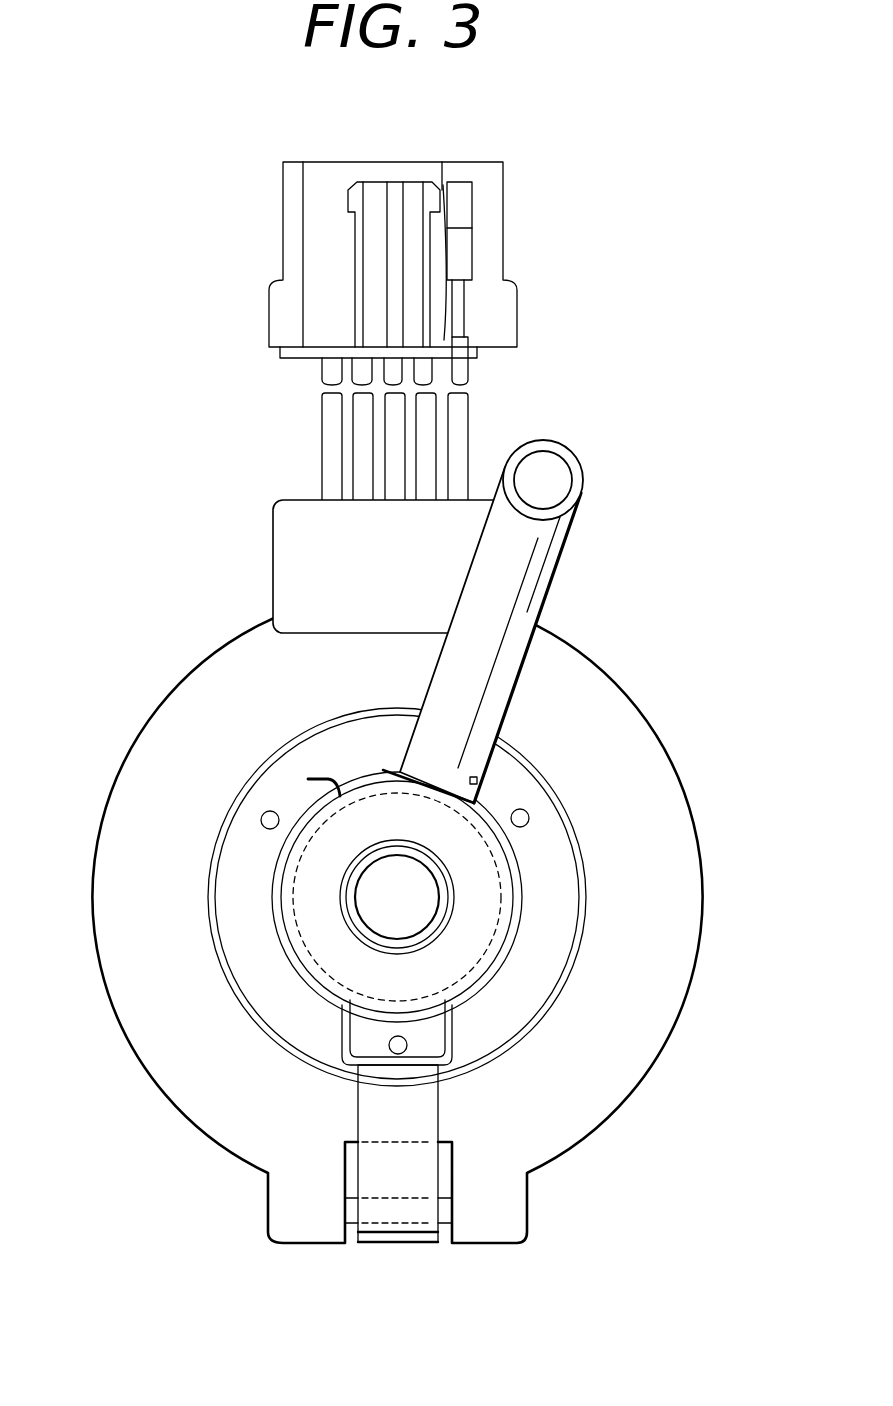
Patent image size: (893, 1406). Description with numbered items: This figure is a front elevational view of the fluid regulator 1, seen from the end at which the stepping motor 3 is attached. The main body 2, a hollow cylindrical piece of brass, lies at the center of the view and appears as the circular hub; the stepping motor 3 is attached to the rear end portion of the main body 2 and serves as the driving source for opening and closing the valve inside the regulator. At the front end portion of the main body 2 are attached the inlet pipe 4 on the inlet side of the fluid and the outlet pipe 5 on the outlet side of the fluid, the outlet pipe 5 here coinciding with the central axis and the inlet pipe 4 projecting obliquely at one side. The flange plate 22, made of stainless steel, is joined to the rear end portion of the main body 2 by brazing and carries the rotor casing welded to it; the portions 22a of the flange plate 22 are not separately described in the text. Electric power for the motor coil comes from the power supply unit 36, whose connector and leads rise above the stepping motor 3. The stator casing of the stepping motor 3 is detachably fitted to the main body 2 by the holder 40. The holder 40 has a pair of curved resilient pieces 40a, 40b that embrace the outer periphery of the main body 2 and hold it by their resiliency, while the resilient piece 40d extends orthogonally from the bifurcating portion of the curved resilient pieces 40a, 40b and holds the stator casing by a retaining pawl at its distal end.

The fluid regulator 1 is at (411, 711).
The main body 2 is at (468, 935).
The stepping motor 3 is at (624, 1009).
The inlet pipe 4 is at (578, 472).
The outlet pipe 5 is at (372, 908).
The flange plate 22 is at (223, 908).
The mounting holes 22a is at (262, 814).
The power supply unit 36 is at (323, 170).
The holder 40 is at (391, 1059).
The curved resilient piece 40a is at (287, 862).
The curved resilient piece 40b is at (497, 943).
The resilient piece 40d is at (398, 1245).